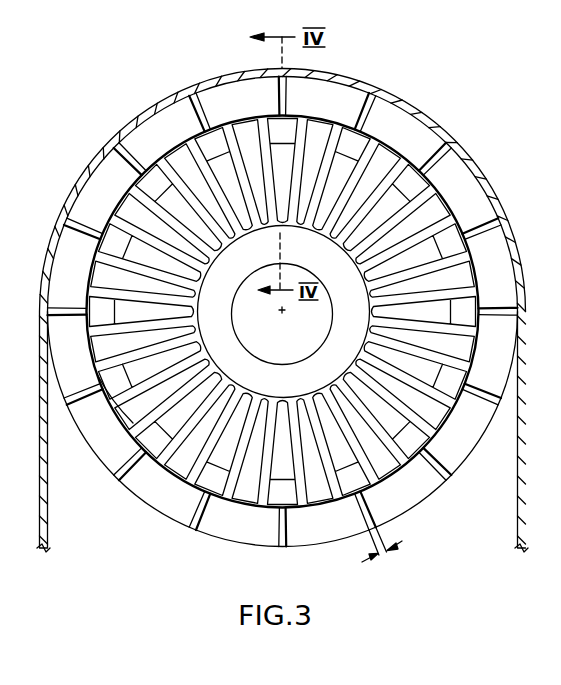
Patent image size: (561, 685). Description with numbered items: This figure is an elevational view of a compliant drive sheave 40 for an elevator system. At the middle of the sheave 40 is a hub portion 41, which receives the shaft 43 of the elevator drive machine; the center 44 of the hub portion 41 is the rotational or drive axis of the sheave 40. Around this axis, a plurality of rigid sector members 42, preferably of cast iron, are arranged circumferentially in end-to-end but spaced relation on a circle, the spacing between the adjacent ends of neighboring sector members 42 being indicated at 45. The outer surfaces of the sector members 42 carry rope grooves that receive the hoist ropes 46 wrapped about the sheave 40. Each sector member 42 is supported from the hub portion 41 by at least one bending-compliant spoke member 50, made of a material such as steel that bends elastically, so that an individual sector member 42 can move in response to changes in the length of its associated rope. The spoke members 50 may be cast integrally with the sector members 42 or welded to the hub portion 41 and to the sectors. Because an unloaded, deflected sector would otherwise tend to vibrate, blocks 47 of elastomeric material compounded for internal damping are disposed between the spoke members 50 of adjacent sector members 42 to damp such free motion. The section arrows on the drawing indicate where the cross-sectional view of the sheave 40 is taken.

The drive sheave 40 is at (430, 494).
The hub portion 41 is at (336, 298).
The sector member 42 is at (162, 133).
The shaft 43 is at (299, 353).
The center 44 is at (279, 315).
The spacing 45 is at (380, 557).
The hoist ropes 46 is at (382, 92).
The block of elastomeric material 47 is at (157, 452).
The bending-compliant spoke member 50 is at (133, 423).